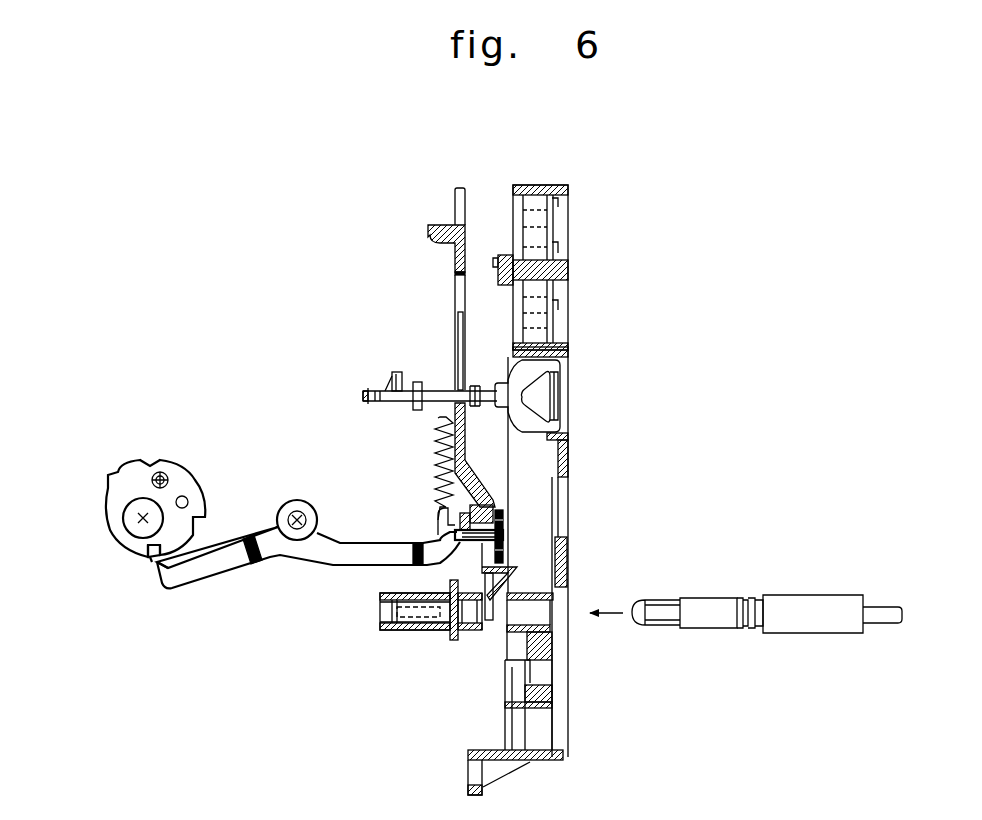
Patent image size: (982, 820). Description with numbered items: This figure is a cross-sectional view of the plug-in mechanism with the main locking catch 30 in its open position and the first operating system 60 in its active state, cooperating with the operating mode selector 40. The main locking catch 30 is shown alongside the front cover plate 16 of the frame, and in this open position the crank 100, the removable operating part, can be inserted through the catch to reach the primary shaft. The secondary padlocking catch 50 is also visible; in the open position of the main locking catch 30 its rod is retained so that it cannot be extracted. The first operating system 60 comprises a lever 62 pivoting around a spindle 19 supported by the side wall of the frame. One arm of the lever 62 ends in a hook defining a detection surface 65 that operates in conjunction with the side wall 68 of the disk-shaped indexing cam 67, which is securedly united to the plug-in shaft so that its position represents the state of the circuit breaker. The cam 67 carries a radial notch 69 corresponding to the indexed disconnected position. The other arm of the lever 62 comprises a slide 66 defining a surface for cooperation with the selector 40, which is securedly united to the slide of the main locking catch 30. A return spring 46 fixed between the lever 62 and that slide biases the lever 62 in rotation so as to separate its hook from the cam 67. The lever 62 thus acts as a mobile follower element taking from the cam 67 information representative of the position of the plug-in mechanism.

The front cover plate 16 is at (566, 282).
The spindle 19 is at (285, 505).
The main locking catch 30 is at (446, 277).
The operating mode selector 40 is at (510, 536).
The return spring 46 is at (443, 450).
The secondary padlocking catch 50 is at (575, 393).
The first operating system 60 is at (258, 557).
The lever 62 is at (230, 580).
The detection surface 65 is at (157, 575).
The slide 66 is at (442, 523).
The cam 67 is at (112, 527).
The side wall 68 is at (112, 545).
The radial notch 69 is at (152, 563).
The crank 100 is at (660, 600).